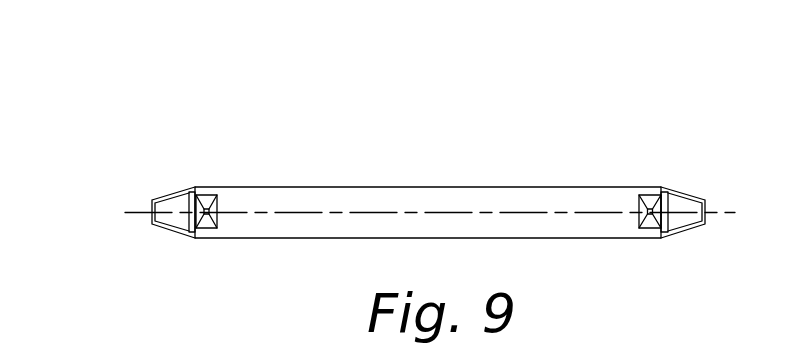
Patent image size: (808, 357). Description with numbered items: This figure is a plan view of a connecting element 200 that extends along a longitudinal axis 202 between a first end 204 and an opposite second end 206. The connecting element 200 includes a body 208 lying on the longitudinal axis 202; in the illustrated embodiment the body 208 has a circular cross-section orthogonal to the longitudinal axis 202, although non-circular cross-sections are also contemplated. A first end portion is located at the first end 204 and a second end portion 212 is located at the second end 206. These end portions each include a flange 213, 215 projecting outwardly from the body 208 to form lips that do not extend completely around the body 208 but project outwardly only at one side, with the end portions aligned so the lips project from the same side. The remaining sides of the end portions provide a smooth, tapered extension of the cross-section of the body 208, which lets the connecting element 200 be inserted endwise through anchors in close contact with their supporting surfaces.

The connecting element 200 is at (426, 116).
The longitudinal axis 202 is at (490, 205).
The first end 204 is at (152, 199).
The second end 206 is at (706, 200).
The body 208 is at (342, 195).
The second end portion 212 is at (651, 195).
The flange 213 is at (207, 198).
The flange 215 is at (650, 222).